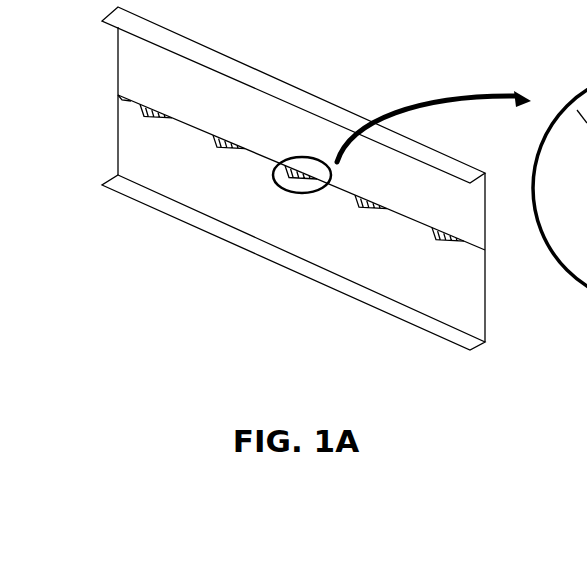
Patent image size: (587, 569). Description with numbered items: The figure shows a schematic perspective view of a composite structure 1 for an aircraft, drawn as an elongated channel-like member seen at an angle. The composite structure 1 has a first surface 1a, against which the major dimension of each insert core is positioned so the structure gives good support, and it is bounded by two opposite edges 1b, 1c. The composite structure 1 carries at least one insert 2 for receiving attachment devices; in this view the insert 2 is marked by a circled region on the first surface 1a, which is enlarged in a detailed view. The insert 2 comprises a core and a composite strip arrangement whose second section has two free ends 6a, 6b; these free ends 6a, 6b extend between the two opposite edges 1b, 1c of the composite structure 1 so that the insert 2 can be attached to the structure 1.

The composite structure 1 is at (299, 178).
The first surface 1a is at (141, 148).
The first opposite edge 1b is at (116, 64).
The second opposite edge 1c is at (488, 281).
The insert 2 is at (287, 184).
The free end 6a is at (116, 94).
The free end 6b is at (488, 251).